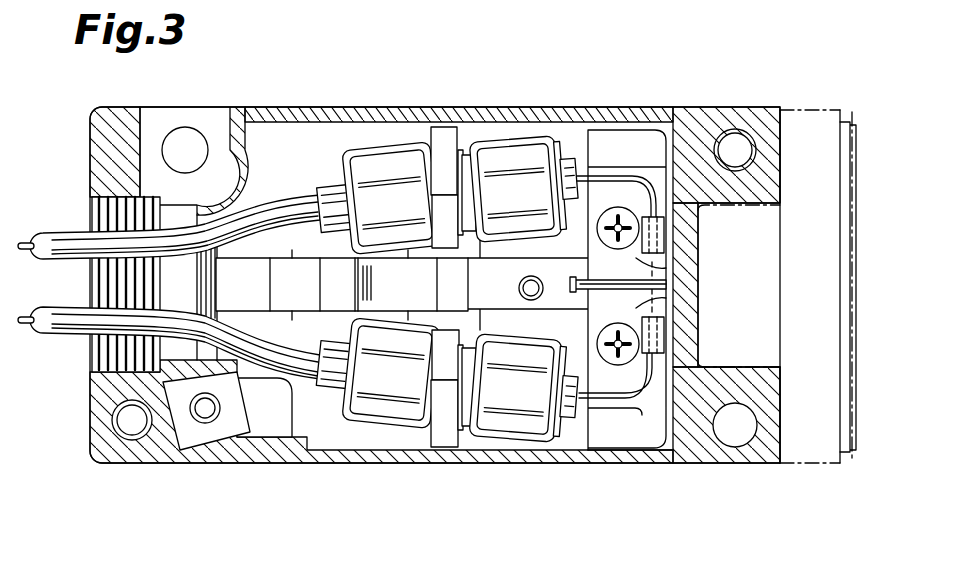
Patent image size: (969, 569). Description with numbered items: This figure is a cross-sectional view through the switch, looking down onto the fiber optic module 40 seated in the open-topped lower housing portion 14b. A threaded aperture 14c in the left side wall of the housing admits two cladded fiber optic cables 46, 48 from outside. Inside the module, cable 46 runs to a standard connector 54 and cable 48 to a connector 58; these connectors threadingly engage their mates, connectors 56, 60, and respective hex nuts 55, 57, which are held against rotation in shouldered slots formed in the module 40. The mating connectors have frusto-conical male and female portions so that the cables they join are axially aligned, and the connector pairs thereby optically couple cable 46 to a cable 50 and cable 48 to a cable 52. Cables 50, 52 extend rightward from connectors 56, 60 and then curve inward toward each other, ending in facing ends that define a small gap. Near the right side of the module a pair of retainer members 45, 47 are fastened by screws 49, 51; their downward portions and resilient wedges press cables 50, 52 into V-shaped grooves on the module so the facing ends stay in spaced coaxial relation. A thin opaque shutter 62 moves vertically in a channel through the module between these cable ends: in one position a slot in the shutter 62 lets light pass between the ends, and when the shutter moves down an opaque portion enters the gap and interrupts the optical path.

The lower housing portion 14b is at (303, 107).
The threaded aperture 14c is at (98, 208).
The fiber optic module 40 is at (590, 428).
The retainer member 45 is at (637, 263).
The fiber optic cable 46 is at (30, 250).
The retainer member 47 is at (640, 303).
The fiber optic cable 48 is at (35, 328).
The screw 49 is at (623, 215).
The fiber optic cable 50 is at (605, 170).
The screw 51 is at (630, 355).
The fiber optic cable 52 is at (645, 425).
The connector 54 is at (392, 155).
The hex nut 55 is at (446, 150).
The connector 56 is at (514, 150).
The hex nut 57 is at (448, 420).
The connector 58 is at (397, 410).
The connector 60 is at (520, 420).
The shutter 62 is at (700, 284).